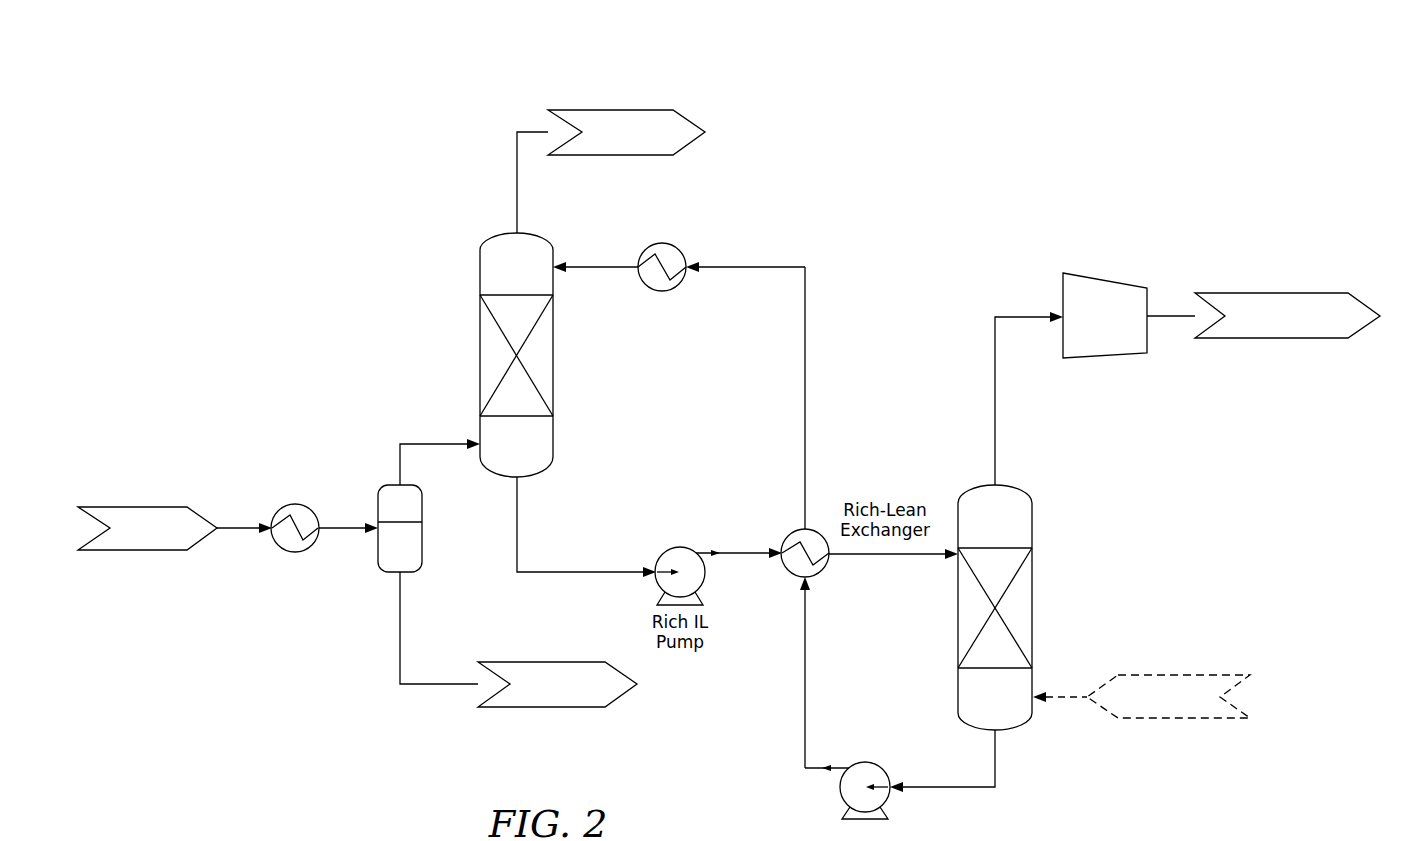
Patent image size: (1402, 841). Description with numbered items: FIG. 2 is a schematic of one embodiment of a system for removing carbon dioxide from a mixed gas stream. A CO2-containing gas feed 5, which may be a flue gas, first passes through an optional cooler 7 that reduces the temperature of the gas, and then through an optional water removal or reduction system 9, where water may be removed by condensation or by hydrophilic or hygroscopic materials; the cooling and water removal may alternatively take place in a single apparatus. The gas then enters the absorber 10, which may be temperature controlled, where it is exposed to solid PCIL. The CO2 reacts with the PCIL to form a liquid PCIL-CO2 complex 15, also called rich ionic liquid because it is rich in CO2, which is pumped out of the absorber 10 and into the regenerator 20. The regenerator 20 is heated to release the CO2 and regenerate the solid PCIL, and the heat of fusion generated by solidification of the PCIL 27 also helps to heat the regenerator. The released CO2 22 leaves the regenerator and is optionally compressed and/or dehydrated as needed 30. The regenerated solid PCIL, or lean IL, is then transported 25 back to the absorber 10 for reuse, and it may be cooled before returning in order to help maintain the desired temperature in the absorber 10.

The CO2-containing gas feed 5 is at (175, 511).
The cooler 7 is at (312, 525).
The water removal or reduction system 9 is at (507, 573).
The absorber 10 is at (552, 293).
The liquid PCIL-CO2 complex 15 is at (737, 532).
The regenerator 20 is at (1073, 607).
The CO2 22 is at (1005, 398).
The lean IL transport 25 is at (774, 534).
The heat of fusion from solidification of the PCIL 27 is at (1141, 681).
The compression and/or dehydration 30 is at (1207, 339).